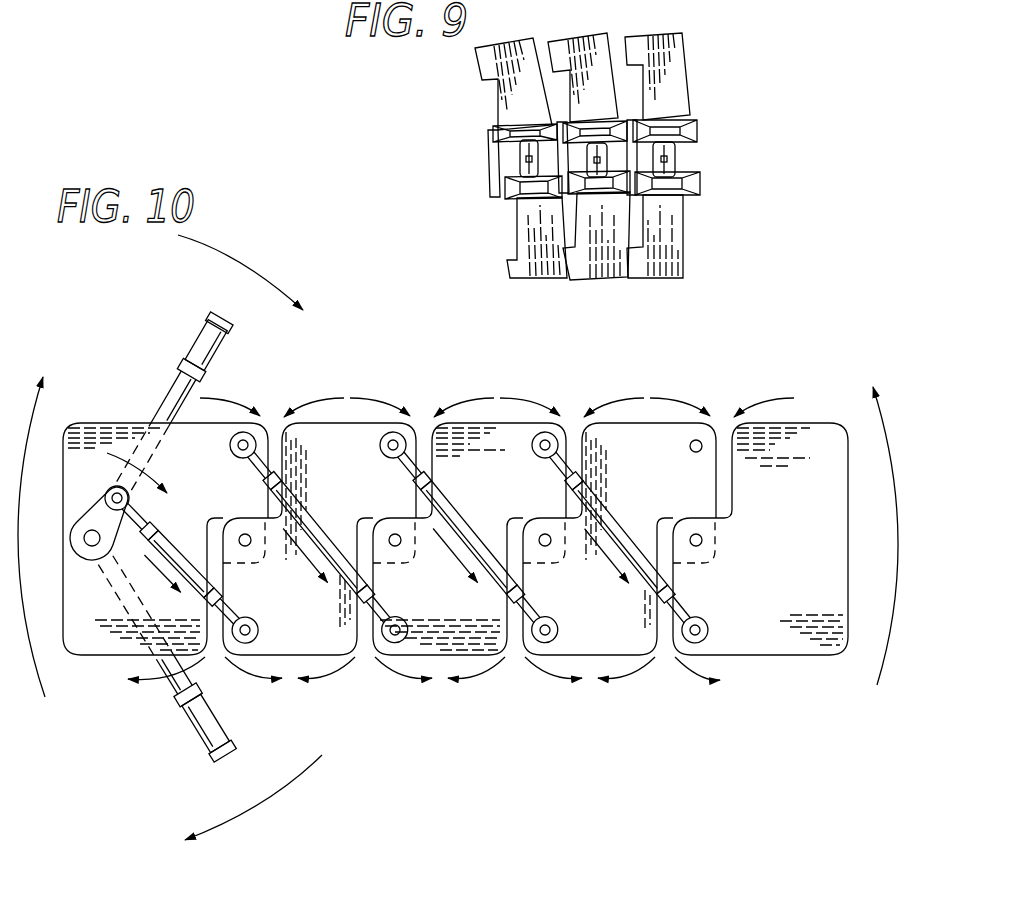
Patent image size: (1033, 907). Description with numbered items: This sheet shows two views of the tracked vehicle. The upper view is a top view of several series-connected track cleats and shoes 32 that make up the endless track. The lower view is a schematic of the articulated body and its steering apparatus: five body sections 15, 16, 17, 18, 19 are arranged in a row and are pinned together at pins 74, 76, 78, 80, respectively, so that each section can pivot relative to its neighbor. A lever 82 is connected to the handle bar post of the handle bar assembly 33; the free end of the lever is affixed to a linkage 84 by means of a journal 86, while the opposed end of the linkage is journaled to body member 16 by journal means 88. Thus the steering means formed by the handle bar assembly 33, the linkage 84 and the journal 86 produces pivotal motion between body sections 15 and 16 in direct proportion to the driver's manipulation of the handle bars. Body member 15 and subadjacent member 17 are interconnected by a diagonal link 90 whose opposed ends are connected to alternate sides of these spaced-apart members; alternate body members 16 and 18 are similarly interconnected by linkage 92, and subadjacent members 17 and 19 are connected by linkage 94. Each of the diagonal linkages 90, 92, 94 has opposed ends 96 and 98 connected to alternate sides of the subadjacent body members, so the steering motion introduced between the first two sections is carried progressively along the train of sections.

In FIG. 9, the track cleats and shoes 32 is at (643, 33).
In FIG. 10, the body section 15 is at (207, 452).
In FIG. 10, the body section 16 is at (354, 452).
In FIG. 10, the body section 17 is at (504, 452).
In FIG. 10, the body section 18 is at (659, 452).
In FIG. 10, the body section 19 is at (807, 452).
In FIG. 10, the handle bar assembly 33 is at (177, 720).
In FIG. 10, the pin 74 is at (249, 545).
In FIG. 10, the pin 76 is at (399, 545).
In FIG. 10, the pin 78 is at (549, 545).
In FIG. 10, the pin 80 is at (699, 545).
In FIG. 10, the lever 82 is at (86, 513).
In FIG. 10, the linkage 84 is at (167, 544).
In FIG. 10, the journal 86 is at (113, 494).
In FIG. 10, the journal means 88 is at (258, 624).
In FIG. 10, the diagonal link 90 is at (334, 545).
In FIG. 10, the linkage 92 is at (486, 545).
In FIG. 10, the linkage 94 is at (637, 547).
In FIG. 10, the opposed end 96 is at (710, 625).
In FIG. 10, the opposed end 98 is at (540, 452).